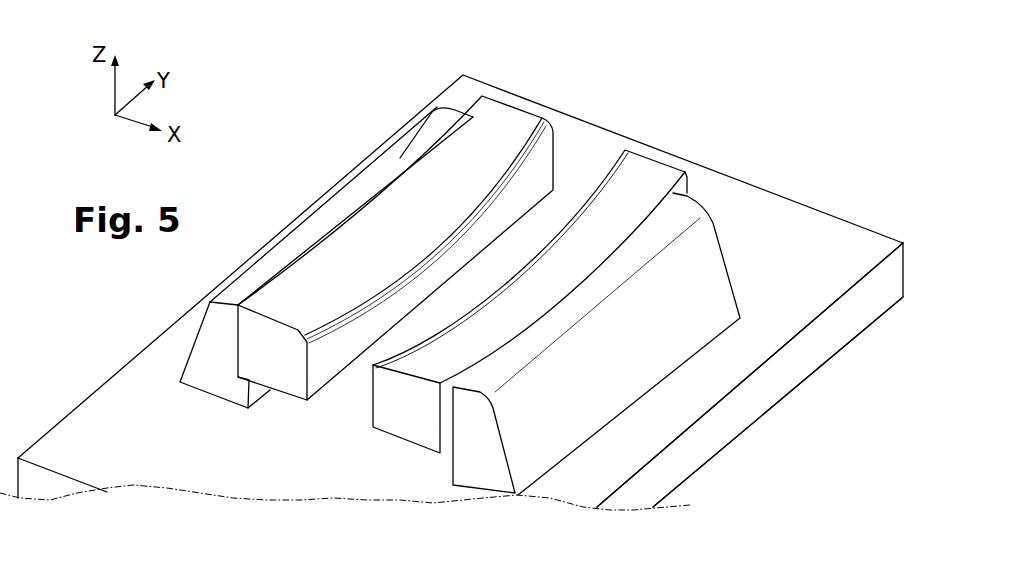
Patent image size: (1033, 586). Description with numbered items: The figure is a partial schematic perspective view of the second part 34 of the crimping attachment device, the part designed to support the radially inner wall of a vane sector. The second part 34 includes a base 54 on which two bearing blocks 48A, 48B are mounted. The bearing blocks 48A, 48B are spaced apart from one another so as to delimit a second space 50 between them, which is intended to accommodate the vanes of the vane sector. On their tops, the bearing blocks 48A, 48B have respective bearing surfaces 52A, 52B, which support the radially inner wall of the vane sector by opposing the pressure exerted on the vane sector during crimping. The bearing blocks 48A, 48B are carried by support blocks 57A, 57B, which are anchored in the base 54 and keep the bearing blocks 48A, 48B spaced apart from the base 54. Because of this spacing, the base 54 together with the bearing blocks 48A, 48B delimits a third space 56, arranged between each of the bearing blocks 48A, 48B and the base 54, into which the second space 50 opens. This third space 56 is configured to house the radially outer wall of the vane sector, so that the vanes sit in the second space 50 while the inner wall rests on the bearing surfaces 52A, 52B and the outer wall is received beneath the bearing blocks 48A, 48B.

The second part 34 is at (823, 205).
The bearing block 48A is at (285, 368).
The bearing block 48B is at (415, 408).
The second space 50 is at (348, 397).
The bearing surface 52A is at (480, 207).
The bearing surface 52B is at (382, 363).
The base 54 is at (808, 347).
The third space 56 is at (397, 450).
The support block 57A is at (208, 365).
The support block 57B is at (550, 443).